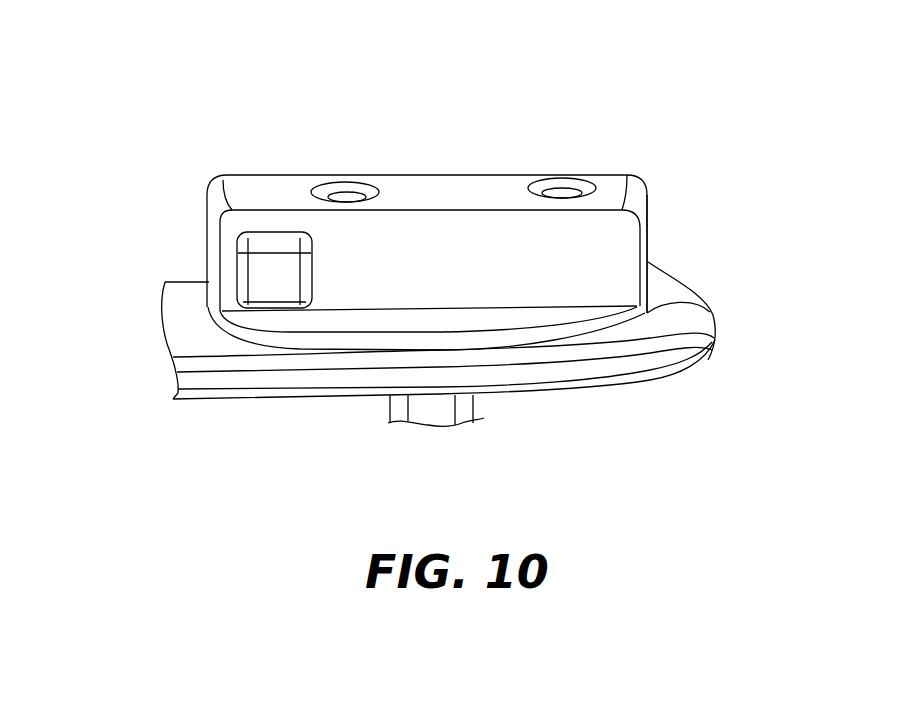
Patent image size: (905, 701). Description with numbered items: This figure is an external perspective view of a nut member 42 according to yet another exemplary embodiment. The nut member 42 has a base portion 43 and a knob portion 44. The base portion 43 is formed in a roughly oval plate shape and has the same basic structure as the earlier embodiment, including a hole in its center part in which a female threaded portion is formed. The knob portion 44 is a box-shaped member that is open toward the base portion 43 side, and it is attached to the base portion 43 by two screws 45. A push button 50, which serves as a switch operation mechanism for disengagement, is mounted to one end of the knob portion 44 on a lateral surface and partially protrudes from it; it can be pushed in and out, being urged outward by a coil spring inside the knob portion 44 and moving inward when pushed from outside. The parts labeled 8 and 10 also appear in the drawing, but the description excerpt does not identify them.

The pins 8 is at (435, 415).
The base plate 10 is at (712, 348).
The nut member 42 is at (517, 172).
The base portion 43 is at (517, 316).
The knob portion 44 is at (648, 252).
The screws 45 is at (340, 192).
The push button 50 is at (257, 276).